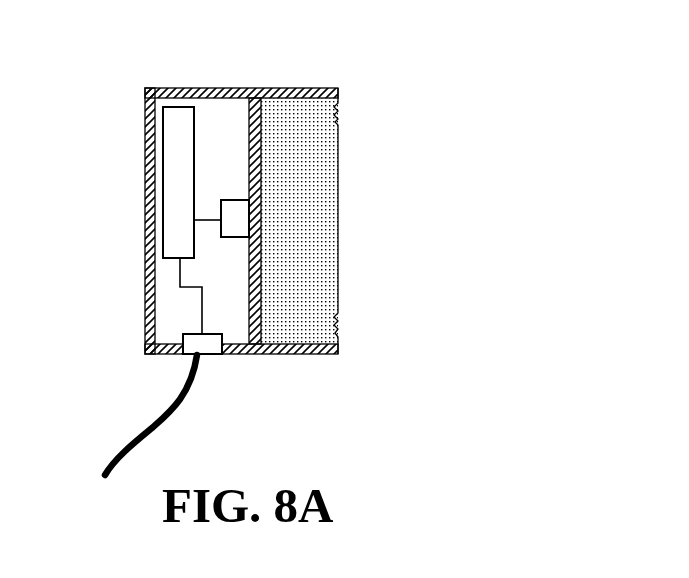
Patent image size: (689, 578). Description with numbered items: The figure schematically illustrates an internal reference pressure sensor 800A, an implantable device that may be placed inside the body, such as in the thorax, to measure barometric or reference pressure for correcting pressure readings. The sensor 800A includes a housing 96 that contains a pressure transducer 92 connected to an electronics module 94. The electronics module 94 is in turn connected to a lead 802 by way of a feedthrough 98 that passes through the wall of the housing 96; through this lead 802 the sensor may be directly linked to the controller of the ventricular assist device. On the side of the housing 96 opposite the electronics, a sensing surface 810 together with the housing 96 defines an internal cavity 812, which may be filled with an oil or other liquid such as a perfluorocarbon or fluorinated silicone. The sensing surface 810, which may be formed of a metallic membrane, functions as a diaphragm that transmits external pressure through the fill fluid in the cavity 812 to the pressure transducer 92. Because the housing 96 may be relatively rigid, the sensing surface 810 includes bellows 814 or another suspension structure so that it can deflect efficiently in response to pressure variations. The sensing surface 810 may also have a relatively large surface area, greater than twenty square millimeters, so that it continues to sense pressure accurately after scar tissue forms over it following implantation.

The internal reference pressure sensor 800A is at (424, 86).
The housing 96 is at (238, 89).
The electronics module 94 is at (177, 117).
The pressure transducer 92 is at (235, 208).
The feedthrough 98 is at (212, 360).
The lead 802 is at (147, 437).
The sensing surface 810 is at (340, 232).
The internal cavity 812 is at (318, 172).
The bellows 814 is at (343, 107).